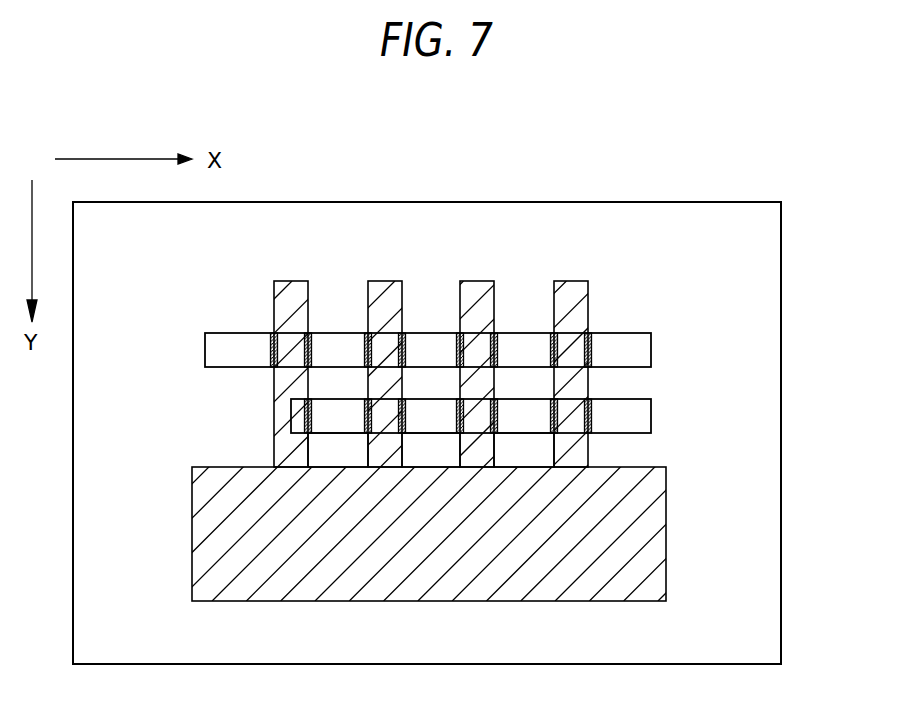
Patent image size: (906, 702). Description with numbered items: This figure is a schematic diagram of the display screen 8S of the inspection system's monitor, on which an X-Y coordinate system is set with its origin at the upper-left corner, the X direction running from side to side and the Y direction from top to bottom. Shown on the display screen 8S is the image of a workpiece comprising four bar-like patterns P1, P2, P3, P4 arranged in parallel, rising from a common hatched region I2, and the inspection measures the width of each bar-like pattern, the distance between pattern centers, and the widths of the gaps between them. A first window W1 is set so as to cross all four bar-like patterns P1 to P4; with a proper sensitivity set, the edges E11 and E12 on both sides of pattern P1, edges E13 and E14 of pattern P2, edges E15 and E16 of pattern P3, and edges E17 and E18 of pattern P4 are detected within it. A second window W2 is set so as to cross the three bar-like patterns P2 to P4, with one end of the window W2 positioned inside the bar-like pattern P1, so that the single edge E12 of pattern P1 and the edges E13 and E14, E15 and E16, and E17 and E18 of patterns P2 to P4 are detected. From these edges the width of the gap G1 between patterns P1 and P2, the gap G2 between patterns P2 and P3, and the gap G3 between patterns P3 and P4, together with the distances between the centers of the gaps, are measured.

The display screen 8S is at (781, 272).
The isolation (insulating) region I2 is at (475, 563).
The bar-like pattern P1 is at (290, 281).
The bar-like pattern P2 is at (385, 281).
The bar-like pattern P3 is at (477, 281).
The bar-like pattern P4 is at (571, 281).
The window W1 is at (651, 350).
The window W2 is at (651, 416).
The gap G1 is at (338, 450).
The gap G2 is at (430, 450).
The gap G3 is at (520, 450).
The edge E11 is at (272, 354).
The edge E12 is at (309, 408).
The edge E13 is at (367, 408).
The edge E14 is at (402, 408).
The edge E15 is at (460, 408).
The edge E16 is at (494, 408).
The edge E17 is at (554, 408).
The edge E18 is at (588, 408).